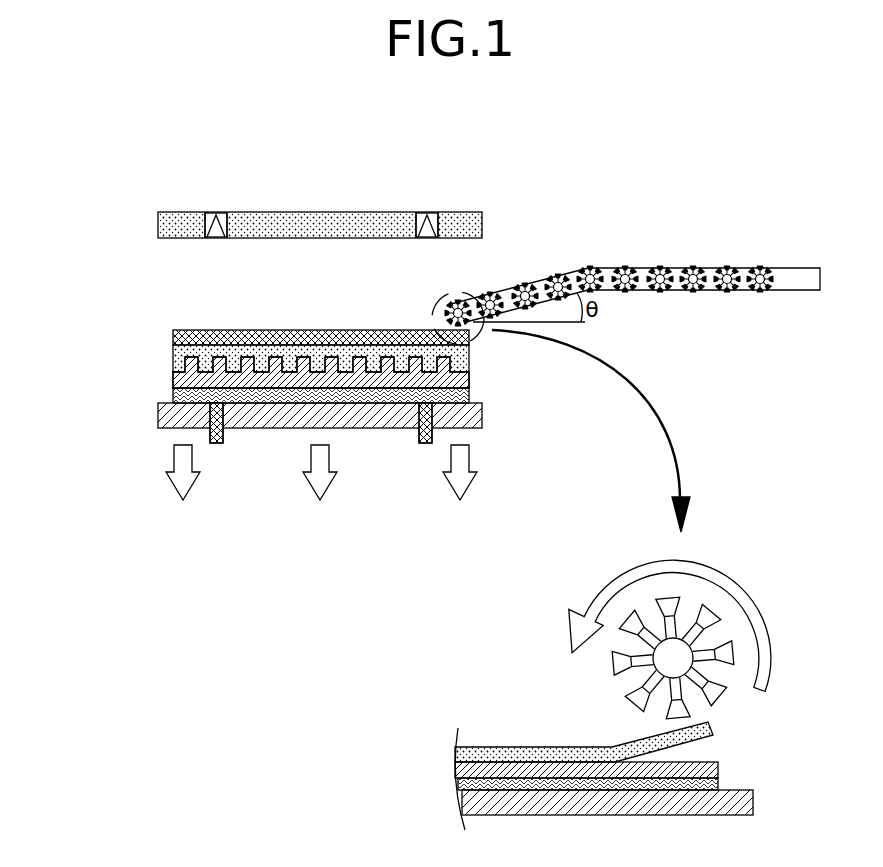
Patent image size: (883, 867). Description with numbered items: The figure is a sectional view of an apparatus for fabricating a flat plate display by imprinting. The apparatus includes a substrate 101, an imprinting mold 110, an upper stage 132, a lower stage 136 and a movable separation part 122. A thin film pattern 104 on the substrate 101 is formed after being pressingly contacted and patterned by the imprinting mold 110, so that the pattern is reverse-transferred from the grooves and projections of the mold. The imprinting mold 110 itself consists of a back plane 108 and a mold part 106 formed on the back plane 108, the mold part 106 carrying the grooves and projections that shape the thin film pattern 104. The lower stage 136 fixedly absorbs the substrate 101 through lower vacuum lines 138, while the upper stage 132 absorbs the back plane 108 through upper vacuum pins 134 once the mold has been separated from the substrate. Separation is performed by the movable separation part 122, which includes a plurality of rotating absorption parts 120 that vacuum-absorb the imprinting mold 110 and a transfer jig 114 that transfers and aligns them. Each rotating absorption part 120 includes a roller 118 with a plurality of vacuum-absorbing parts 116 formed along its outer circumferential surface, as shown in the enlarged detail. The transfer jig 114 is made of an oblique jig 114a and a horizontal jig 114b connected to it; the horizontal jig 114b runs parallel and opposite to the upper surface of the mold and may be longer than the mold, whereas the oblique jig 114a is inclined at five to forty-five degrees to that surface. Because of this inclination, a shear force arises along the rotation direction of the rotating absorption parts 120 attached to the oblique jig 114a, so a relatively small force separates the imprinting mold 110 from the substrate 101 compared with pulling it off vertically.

The substrate 101 is at (462, 398).
The thin film pattern 104 is at (186, 378).
The mold part 106 is at (186, 350).
The back plane 108 is at (174, 337).
The imprinting mold 110 is at (430, 547).
The transfer jig 114 is at (564, 233).
The oblique jig 114a is at (538, 278).
The horizontal jig 114b is at (547, 190).
The vacuum-absorbing parts 116 is at (702, 607).
The roller 118 is at (668, 662).
The rotating absorption part 120 is at (726, 268).
The movable separation part 122 is at (662, 400).
The upper stage 132 is at (461, 212).
The upper vacuum pins 134 is at (426, 238).
The lower stage 136 is at (462, 415).
The lower vacuum lines 138 is at (427, 441).